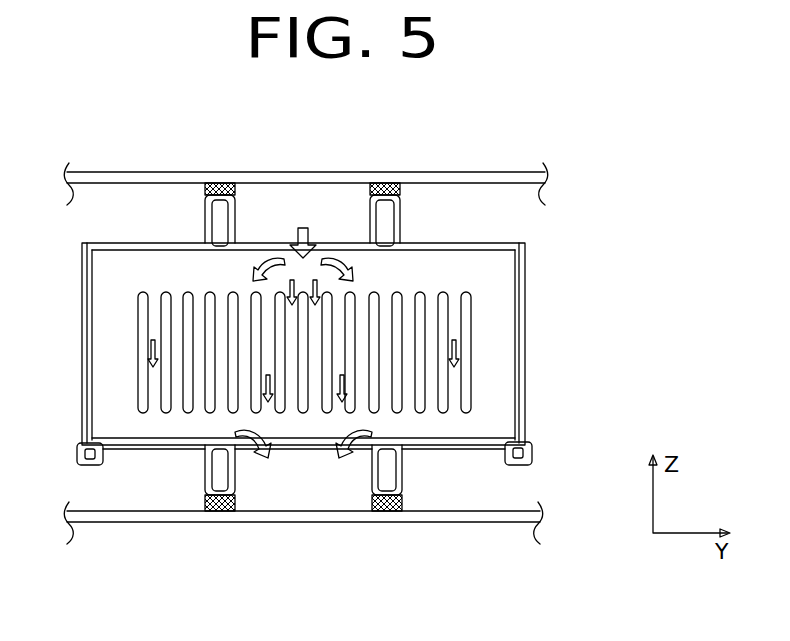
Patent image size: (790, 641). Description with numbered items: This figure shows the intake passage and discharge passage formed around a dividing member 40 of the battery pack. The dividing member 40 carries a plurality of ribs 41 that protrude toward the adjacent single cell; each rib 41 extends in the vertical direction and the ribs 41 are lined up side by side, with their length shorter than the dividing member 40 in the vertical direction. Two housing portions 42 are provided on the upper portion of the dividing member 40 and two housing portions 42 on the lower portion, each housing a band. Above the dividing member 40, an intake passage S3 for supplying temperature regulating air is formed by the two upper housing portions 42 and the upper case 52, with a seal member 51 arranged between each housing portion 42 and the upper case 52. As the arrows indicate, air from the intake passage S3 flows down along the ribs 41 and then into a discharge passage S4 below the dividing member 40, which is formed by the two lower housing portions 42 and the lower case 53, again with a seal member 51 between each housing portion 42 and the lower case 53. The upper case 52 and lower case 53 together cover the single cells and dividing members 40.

The dividing member 40 is at (534, 284).
The rib 41 is at (142, 335).
The housing portion 42 is at (205, 226).
The seal member 51 is at (205, 189).
The upper case 52 is at (447, 172).
The lower case 53 is at (461, 523).
The intake passage S3 is at (262, 195).
The discharge passage S4 is at (340, 494).